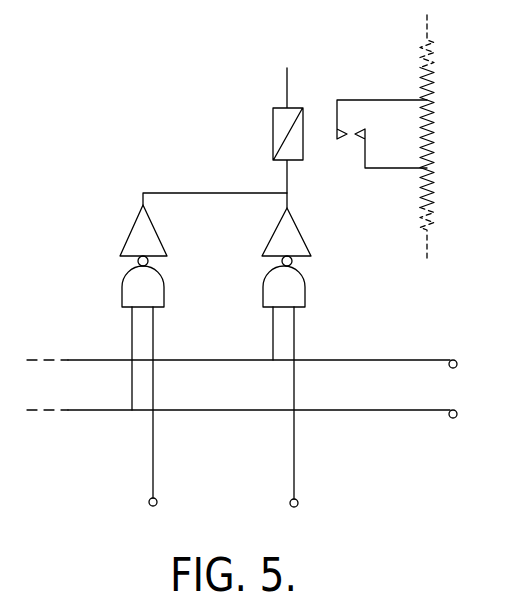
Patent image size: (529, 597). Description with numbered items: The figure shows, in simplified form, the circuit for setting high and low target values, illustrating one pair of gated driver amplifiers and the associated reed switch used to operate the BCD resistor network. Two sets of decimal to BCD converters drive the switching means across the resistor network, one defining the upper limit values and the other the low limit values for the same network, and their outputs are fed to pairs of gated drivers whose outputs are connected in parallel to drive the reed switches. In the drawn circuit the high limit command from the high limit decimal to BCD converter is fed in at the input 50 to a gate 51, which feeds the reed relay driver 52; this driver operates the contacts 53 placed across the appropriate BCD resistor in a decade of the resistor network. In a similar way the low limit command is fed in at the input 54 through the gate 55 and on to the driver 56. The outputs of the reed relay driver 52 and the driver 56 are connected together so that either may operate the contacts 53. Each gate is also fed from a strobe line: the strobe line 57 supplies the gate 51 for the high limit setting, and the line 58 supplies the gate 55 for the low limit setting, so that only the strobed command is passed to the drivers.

The high limit command input 50 is at (298, 503).
The gate 51 is at (296, 287).
The reed relay driver 52 is at (293, 235).
The contacts 53 is at (348, 128).
The low limit command input 54 is at (149, 502).
The gate 55 is at (153, 287).
The driver 56 is at (146, 234).
The strobe line 57 is at (455, 360).
The strobe line 58 is at (455, 410).